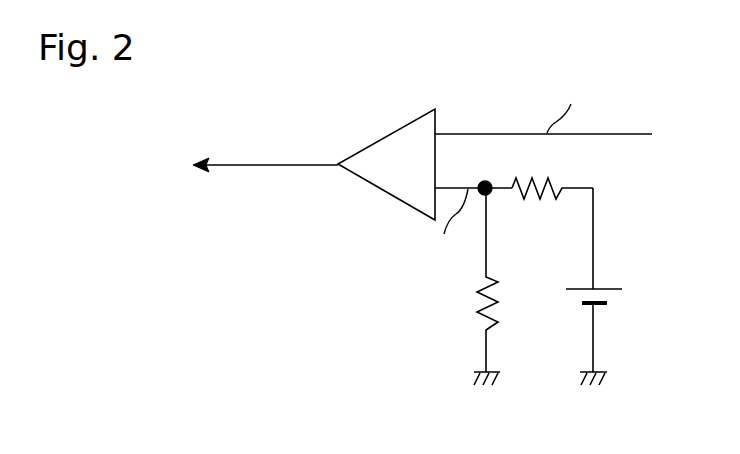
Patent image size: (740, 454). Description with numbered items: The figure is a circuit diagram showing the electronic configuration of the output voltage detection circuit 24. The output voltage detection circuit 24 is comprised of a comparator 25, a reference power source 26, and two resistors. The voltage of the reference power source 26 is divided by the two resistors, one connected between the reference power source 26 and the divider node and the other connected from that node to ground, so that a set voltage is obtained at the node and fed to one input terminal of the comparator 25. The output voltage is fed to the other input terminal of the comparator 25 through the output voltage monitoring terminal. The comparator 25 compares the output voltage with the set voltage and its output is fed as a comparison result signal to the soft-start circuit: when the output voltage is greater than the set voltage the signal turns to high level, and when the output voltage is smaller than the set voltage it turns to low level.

The output voltage detection circuit 24 is at (444, 79).
The comparator 25 is at (403, 126).
The reference power source 26 is at (607, 278).